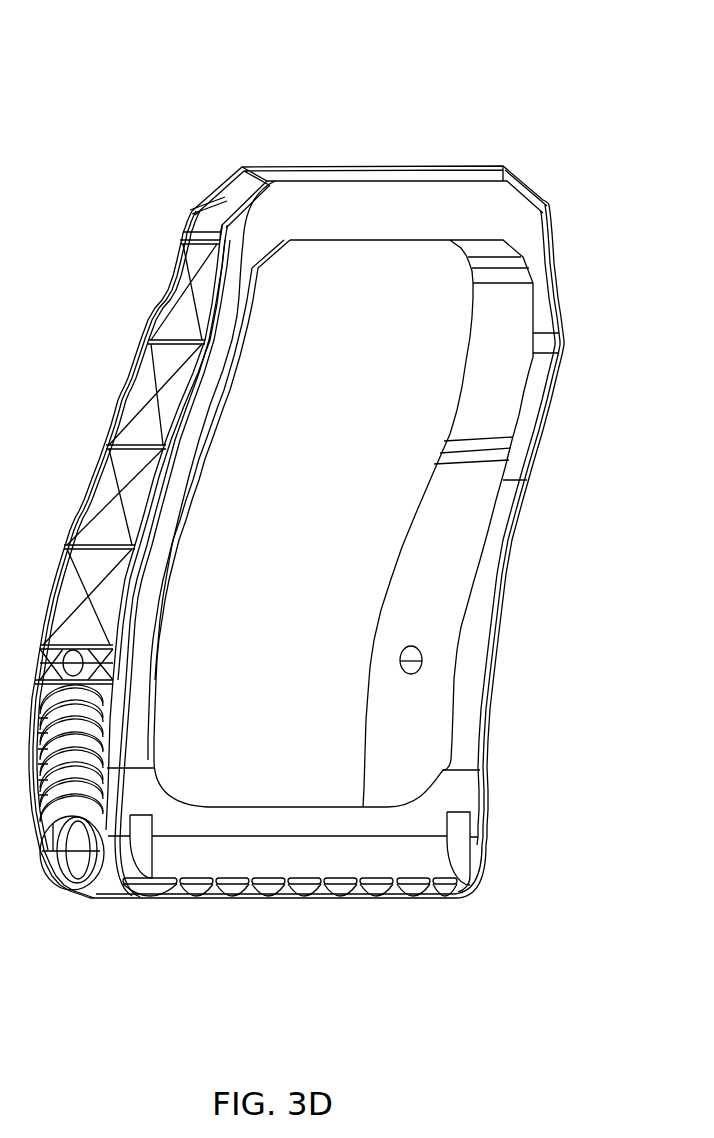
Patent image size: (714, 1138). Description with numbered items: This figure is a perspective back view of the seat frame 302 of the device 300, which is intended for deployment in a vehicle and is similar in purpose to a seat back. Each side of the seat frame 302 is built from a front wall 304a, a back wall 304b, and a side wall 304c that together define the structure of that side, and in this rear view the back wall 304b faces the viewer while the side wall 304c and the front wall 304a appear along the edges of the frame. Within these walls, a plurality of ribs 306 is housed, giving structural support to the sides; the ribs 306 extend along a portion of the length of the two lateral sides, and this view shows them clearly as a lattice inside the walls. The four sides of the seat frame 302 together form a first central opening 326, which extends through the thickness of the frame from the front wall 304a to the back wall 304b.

The device 300 is at (300, 44).
The seat frame 302 is at (360, 103).
The front wall 304a is at (133, 390).
The back wall 304b is at (208, 410).
The side wall 304c is at (468, 420).
The plurality of ribs 306 is at (170, 327).
The first central opening 326 is at (327, 533).